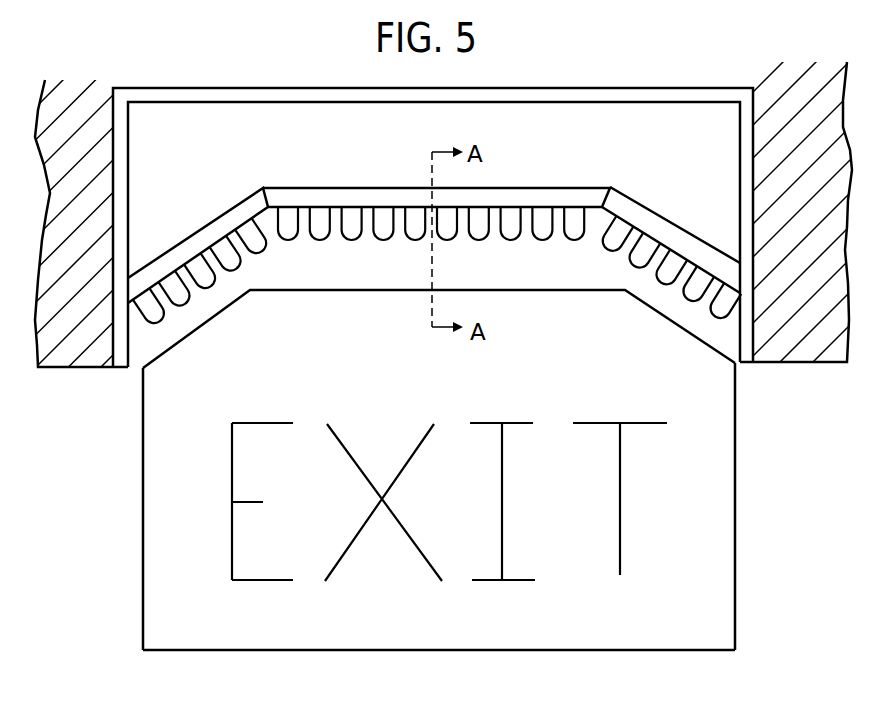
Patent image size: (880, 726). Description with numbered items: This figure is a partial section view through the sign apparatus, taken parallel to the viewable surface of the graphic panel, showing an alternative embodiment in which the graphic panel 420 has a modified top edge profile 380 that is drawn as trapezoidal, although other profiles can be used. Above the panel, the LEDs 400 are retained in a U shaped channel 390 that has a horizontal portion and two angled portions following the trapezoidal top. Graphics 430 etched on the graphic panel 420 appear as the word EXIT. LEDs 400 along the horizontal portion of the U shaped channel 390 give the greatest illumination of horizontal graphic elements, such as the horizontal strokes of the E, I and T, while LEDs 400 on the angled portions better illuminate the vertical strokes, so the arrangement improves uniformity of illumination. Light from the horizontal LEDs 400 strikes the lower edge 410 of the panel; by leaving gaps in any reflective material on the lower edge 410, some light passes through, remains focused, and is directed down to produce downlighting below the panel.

The top edge profile 380 is at (622, 288).
The U shaped channel 390 is at (222, 215).
The light emitting diodes 400 is at (380, 222).
The lower edge of the graphic panel 410 is at (520, 650).
The graphic panel 420 is at (713, 458).
The graphics 430 is at (621, 544).